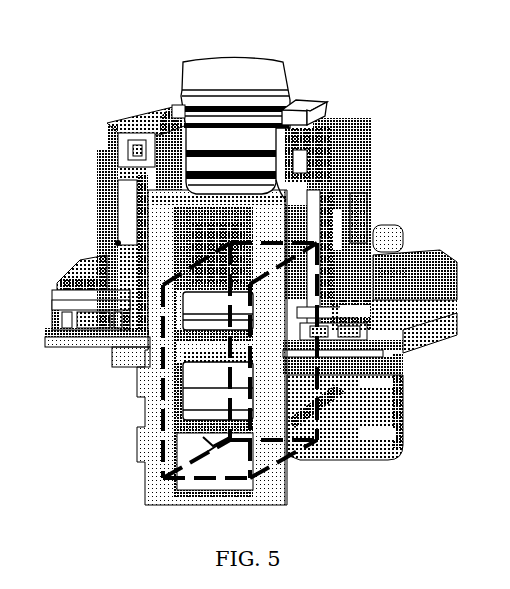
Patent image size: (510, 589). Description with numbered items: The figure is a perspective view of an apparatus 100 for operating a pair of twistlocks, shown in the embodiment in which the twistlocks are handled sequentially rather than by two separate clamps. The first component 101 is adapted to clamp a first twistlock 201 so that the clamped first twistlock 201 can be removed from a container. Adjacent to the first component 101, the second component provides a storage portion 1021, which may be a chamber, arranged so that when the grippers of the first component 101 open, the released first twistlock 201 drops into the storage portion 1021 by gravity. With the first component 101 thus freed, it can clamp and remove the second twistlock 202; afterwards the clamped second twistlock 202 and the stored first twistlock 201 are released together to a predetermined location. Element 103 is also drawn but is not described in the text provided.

The apparatus 100 is at (138, 40).
The first component 101 is at (118, 153).
The storage portion 1021 is at (158, 312).
The base 103 is at (388, 383).
The first twistlock 201 is at (210, 392).
The second twistlock 202 is at (257, 70).